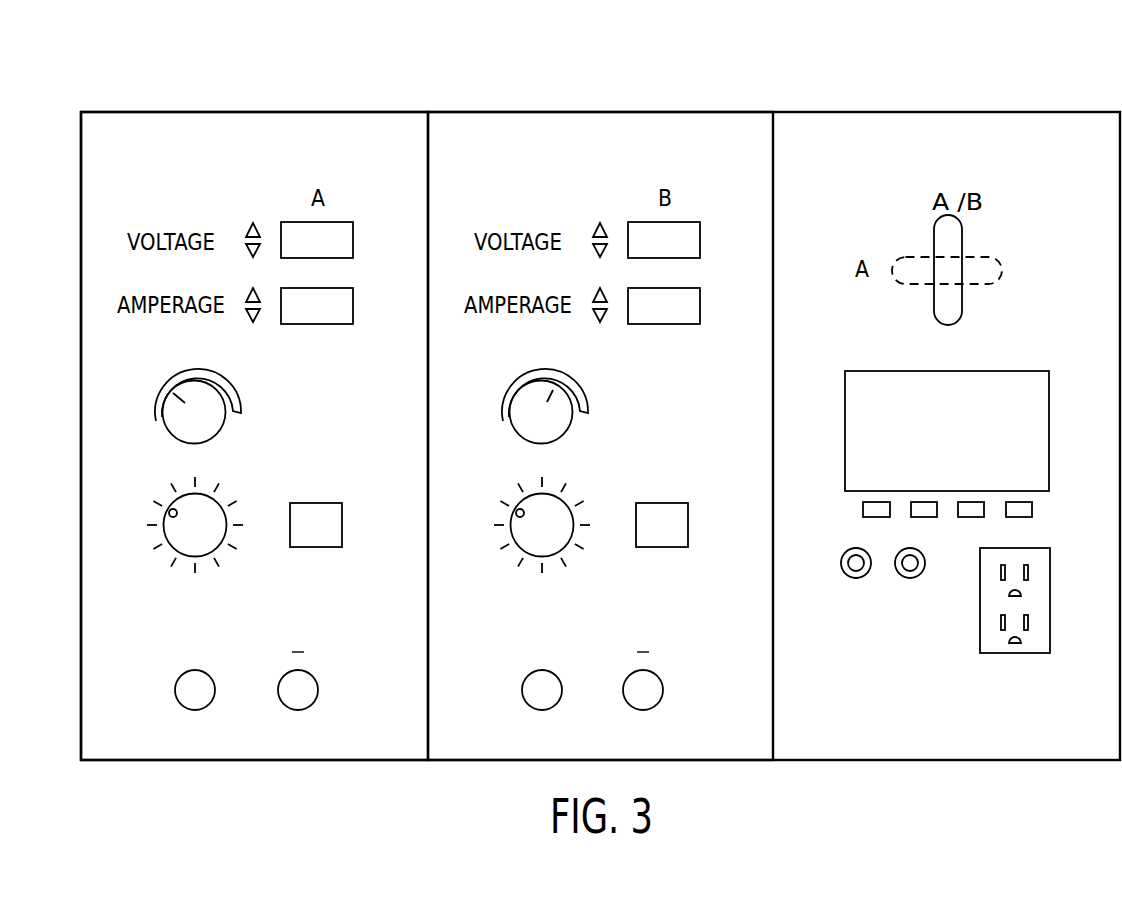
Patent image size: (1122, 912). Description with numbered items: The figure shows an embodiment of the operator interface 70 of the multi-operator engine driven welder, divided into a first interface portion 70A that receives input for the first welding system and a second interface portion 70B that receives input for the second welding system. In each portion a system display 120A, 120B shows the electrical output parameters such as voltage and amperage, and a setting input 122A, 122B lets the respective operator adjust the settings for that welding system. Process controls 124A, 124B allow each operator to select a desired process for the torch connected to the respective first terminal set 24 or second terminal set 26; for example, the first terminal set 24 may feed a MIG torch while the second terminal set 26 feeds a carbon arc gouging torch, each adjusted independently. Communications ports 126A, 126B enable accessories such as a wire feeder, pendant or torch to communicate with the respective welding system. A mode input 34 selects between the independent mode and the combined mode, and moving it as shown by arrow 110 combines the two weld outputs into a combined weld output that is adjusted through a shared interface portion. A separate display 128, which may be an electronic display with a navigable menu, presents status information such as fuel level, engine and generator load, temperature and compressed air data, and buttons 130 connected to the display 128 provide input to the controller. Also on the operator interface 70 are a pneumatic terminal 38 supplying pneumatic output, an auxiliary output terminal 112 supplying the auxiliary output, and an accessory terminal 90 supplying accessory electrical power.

The operator interface 70 is at (781, 72).
The first interface portion 70A is at (257, 125).
The second interface portion 70B is at (615, 125).
The system display 120A is at (353, 305).
The system display 120B is at (700, 305).
The setting input 122A is at (242, 259).
The setting input 122B is at (589, 259).
The process control 124A is at (217, 502).
The process control 124B is at (564, 502).
The communications port 126A is at (342, 525).
The communications port 126B is at (688, 525).
The first terminal set 24 is at (278, 690).
The second terminal set 26 is at (623, 690).
The arrow 110 is at (893, 250).
The mode input 34 is at (962, 312).
The display 128 is at (1049, 430).
The buttons 130 is at (1031, 507).
The pneumatic terminal 38 is at (856, 578).
The auxiliary output terminal 112 is at (910, 578).
The accessory terminal 90 is at (1014, 654).